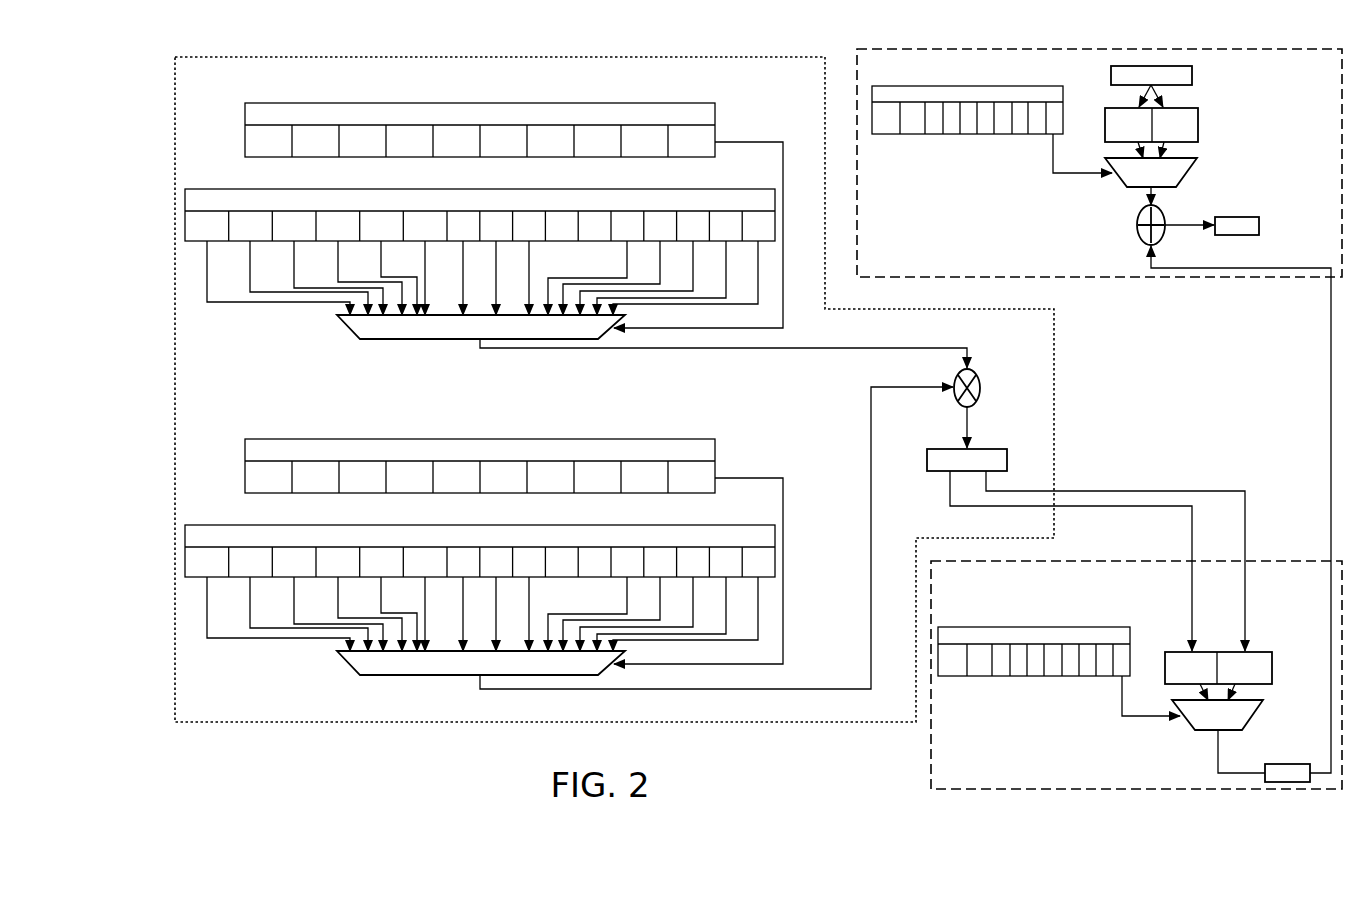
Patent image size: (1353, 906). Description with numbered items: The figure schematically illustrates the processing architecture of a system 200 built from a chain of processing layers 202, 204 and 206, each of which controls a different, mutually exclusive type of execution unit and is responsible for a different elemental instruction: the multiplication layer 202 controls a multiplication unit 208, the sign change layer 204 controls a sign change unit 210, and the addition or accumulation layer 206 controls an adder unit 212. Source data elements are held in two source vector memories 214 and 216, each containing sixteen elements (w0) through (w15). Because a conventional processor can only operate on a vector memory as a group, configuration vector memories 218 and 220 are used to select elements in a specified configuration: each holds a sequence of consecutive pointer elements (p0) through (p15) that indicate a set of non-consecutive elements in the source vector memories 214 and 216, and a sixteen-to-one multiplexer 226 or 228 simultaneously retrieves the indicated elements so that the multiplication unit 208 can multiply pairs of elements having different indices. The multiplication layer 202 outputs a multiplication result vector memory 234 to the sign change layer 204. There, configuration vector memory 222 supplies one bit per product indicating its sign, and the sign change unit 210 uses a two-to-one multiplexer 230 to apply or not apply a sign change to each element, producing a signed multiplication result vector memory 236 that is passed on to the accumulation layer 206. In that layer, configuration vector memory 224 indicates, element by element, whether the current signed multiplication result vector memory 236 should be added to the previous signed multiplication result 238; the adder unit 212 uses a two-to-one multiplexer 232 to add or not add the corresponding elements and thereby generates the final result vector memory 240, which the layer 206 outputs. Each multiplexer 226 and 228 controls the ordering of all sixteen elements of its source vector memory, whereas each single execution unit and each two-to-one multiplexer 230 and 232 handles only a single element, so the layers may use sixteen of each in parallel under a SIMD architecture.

The system 200 is at (256, 765).
The multiplication layer 202 is at (325, 724).
The sign change layer 204 is at (930, 780).
The accumulation layer 206 is at (1126, 279).
The multiplication unit 208 is at (981, 388).
The sign change unit 210 is at (1273, 646).
The adder unit 212 is at (1137, 222).
The source vector memory 214 is at (217, 188).
The source vector memory 216 is at (213, 524).
The configuration vector memory 218 is at (275, 102).
The configuration vector memory 220 is at (272, 438).
The configuration vector memory 222 is at (1014, 626).
The configuration vector memory 224 is at (994, 85).
The multiplexer 226 is at (348, 330).
The multiplexer 228 is at (348, 666).
The multiplexer 230 is at (1198, 733).
The multiplexer 232 is at (1187, 172).
The multiplication result vector memory 234 is at (1007, 462).
The signed multiplication result vector memory 236 is at (1285, 763).
The previous signed multiplication result 238 is at (1192, 72).
The final result vector memory 240 is at (1259, 227).